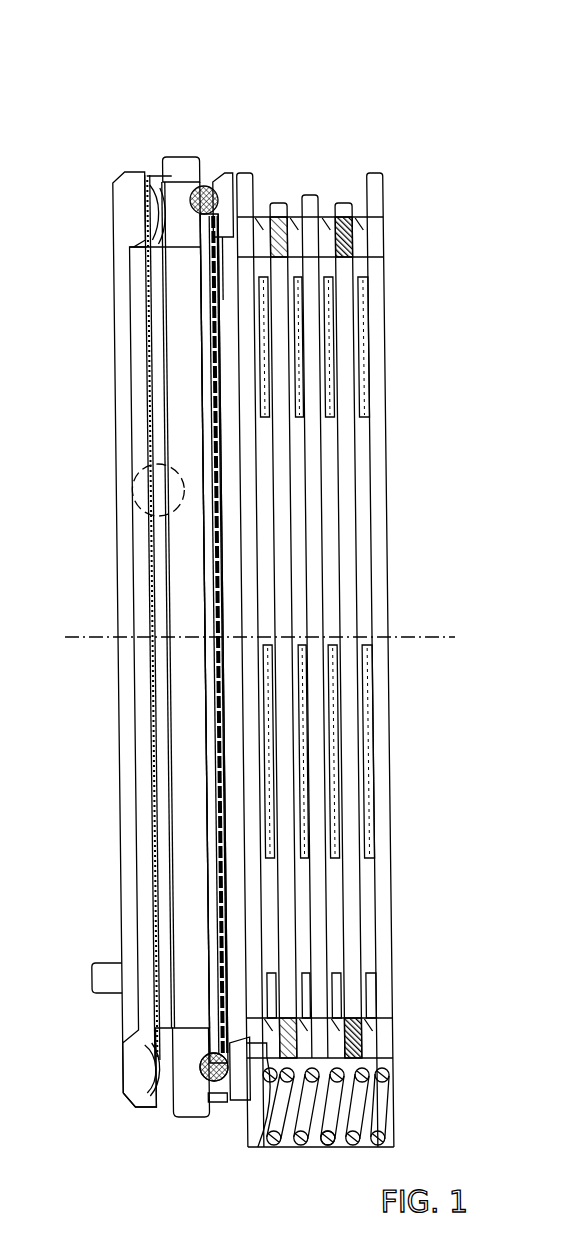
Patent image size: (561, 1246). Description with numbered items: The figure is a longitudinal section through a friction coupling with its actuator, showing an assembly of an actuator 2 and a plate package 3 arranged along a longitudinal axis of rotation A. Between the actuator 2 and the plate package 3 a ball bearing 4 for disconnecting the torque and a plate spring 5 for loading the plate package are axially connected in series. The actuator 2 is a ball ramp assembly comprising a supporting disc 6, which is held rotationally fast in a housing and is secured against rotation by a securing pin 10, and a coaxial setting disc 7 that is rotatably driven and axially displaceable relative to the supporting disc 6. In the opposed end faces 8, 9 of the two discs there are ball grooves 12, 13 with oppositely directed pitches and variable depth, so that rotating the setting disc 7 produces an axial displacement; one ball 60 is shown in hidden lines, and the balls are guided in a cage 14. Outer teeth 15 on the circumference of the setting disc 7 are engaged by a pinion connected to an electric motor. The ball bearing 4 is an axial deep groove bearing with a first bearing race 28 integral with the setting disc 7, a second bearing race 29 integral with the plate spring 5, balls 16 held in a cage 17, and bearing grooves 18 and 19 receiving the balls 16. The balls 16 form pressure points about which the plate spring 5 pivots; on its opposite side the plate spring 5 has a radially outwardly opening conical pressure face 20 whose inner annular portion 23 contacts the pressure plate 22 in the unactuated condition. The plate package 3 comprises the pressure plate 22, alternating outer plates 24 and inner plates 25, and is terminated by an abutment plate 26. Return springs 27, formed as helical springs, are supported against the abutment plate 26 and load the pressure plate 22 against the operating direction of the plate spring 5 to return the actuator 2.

The actuator 2 is at (91, 104).
The plate package 3 is at (298, 100).
The ball bearing 4 is at (208, 100).
The plate spring 5 is at (222, 182).
The supporting disc 6 is at (113, 207).
The setting disc 7 is at (160, 178).
The end face 8 is at (145, 256).
The end face 9 is at (160, 1110).
The securing pin 10 is at (98, 968).
The ball groove 12 is at (127, 1095).
The ball groove 13 is at (178, 252).
The cage 14 is at (150, 1052).
The outer teeth 15 is at (173, 165).
The balls 16 is at (198, 1064).
The cage 17 is at (207, 344).
The first bearing groove 18 is at (198, 188).
The second bearing groove 19 is at (212, 187).
The conical pressure face 20 is at (245, 1150).
The pressure plate 22 is at (247, 176).
The inner annular portion 23 is at (266, 1140).
The outer plates 24 is at (342, 212).
The inner plates 25 is at (292, 232).
The abutment plate 26 is at (380, 1085).
The return springs 27 is at (311, 1135).
The first bearing race 28 is at (193, 1100).
The second bearing race 29 is at (218, 1093).
The ball 60 is at (134, 490).
The longitudinal axis of rotation A is at (67, 637).